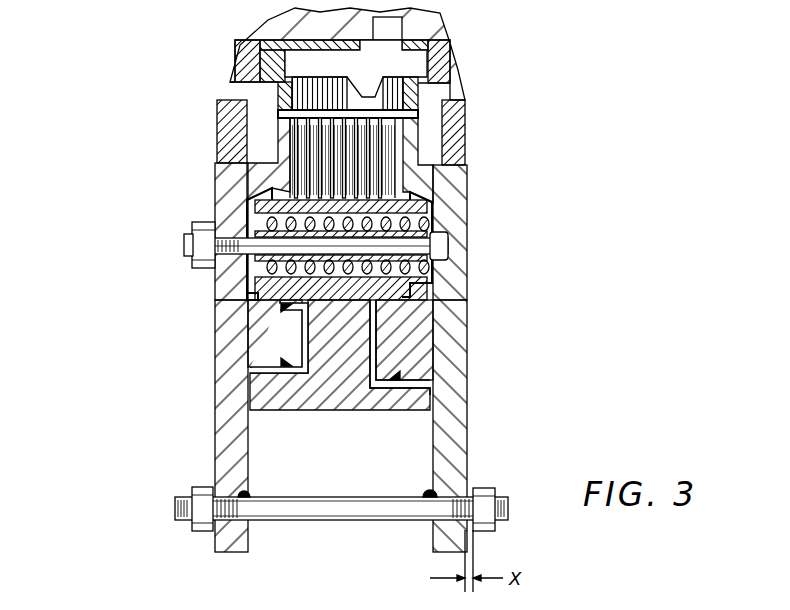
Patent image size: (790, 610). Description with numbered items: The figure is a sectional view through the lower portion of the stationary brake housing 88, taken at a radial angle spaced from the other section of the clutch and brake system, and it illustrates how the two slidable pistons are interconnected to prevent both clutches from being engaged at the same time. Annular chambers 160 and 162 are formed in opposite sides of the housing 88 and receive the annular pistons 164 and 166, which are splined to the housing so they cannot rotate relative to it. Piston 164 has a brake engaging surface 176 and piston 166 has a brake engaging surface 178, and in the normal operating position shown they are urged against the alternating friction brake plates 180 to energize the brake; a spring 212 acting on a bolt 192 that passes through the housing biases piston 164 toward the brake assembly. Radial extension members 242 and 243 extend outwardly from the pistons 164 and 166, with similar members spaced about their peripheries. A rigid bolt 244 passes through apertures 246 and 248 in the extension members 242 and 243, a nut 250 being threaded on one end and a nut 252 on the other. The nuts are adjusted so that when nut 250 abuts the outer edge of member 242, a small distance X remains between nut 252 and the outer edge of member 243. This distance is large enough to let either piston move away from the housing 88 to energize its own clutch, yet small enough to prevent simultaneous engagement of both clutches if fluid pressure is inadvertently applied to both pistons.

The stationary housing 88 is at (348, 348).
The annular chamber 160 is at (297, 374).
The annular chamber 162 is at (377, 388).
The annular piston 164 is at (298, 348).
The annular piston 166 is at (422, 348).
The brake engaging surface 176 is at (283, 158).
The brake engaging surface 178 is at (355, 163).
The friction clutch surfaces 180 is at (462, 182).
The bolt 192 is at (412, 245).
The spring 212 is at (432, 208).
The radial extension member 242 is at (222, 455).
The radial extension member 243 is at (455, 470).
The rigid bolt 244 is at (314, 508).
The aperture 246 is at (250, 497).
The aperture 248 is at (424, 497).
The nut 250 is at (200, 530).
The nut 252 is at (483, 532).